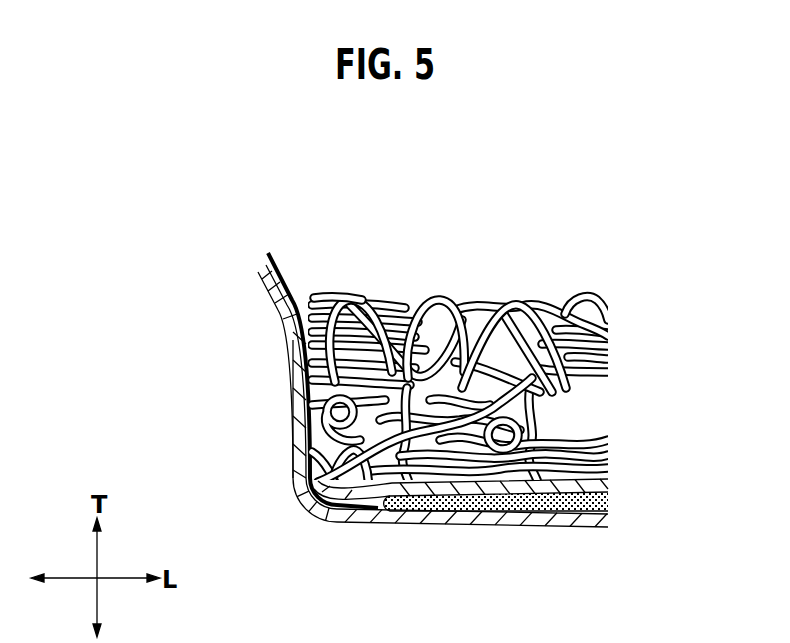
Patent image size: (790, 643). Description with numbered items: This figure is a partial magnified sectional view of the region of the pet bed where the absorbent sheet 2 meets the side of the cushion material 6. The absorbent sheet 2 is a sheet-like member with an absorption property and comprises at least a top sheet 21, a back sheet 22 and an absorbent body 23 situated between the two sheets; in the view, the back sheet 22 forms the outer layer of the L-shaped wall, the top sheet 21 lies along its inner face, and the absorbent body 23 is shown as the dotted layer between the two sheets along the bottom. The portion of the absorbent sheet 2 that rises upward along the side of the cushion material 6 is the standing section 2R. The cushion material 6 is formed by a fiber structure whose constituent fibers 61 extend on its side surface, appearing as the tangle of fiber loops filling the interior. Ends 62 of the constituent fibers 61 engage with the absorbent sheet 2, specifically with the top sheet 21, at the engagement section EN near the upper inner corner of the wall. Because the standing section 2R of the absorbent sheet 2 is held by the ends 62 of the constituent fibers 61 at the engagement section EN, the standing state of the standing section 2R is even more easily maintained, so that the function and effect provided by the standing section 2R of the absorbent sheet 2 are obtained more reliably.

The absorbent sheet 2 is at (392, 332).
The top sheet 21 is at (282, 266).
The back sheet 22 is at (268, 289).
The standing section 2R is at (272, 404).
The cushion material 6 is at (490, 343).
The constituent fibers 61 is at (590, 300).
The ends of constituent fibers 62 is at (312, 290).
The engagement section EN is at (328, 290).
The absorbent body 23 is at (427, 503).